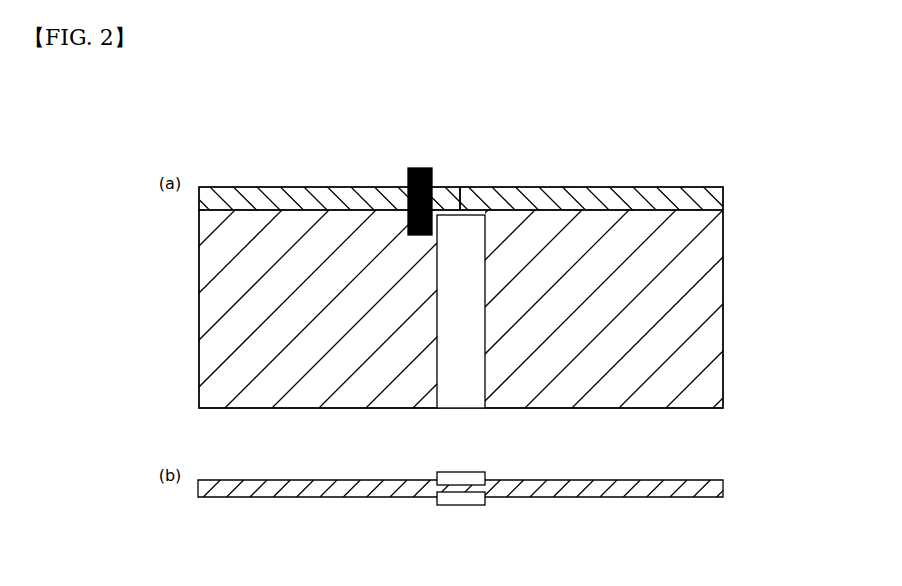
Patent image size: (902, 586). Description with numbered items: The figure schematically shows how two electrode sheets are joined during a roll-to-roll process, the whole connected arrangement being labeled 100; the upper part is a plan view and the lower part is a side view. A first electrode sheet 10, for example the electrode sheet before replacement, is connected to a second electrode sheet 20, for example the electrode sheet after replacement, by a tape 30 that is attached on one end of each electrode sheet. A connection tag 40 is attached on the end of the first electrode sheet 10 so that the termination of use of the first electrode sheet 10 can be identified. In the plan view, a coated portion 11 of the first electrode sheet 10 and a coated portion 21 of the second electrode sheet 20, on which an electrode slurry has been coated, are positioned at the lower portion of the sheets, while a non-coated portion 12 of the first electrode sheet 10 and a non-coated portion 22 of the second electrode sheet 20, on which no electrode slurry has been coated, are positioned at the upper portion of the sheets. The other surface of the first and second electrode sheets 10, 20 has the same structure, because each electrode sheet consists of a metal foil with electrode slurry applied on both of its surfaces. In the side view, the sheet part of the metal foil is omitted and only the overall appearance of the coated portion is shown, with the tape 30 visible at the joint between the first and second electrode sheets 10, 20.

The battery / electrode assembly 100 is at (798, 123).
The first electrode sheet 10 is at (329, 342).
The coated portion 11 is at (200, 285).
The non-coated portion 12 is at (200, 213).
The second electrode sheet 20 is at (596, 342).
The coated portion 21 is at (710, 258).
The non-coated portion 22 is at (722, 210).
The tape 30 is at (468, 390).
The connection tag 40 is at (408, 168).